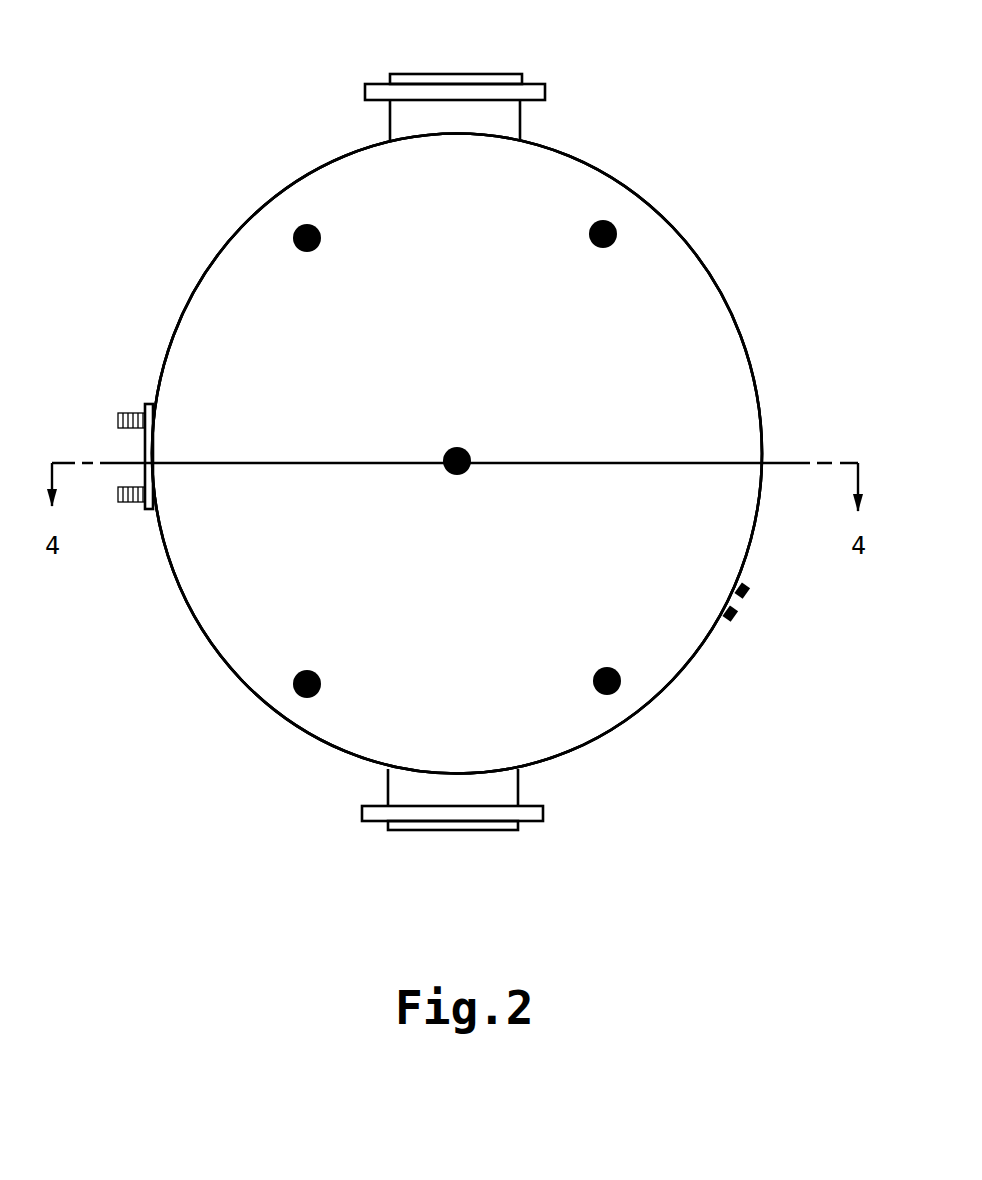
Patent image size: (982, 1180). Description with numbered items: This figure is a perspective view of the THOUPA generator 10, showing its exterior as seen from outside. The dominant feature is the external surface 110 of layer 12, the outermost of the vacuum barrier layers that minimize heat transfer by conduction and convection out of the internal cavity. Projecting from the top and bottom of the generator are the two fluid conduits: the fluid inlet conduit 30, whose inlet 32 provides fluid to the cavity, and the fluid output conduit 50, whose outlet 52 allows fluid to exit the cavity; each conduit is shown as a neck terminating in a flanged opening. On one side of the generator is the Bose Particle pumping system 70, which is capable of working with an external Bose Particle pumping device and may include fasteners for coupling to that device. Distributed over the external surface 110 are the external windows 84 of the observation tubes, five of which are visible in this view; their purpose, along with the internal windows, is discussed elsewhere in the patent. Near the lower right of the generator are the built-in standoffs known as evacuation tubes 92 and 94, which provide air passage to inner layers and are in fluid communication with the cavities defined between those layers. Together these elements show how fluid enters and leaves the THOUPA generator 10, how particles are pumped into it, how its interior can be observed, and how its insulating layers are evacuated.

The THOUPA generator 10 is at (168, 132).
The external surface 110 is at (710, 268).
The layer 12 is at (457, 454).
The fluid inlet conduit 30 is at (372, 783).
The inlet 32 is at (463, 833).
The fluid output conduit 50 is at (547, 118).
The outlet 52 is at (448, 67).
The Bose Particle pumping system 70 is at (146, 402).
The external windows 84 is at (301, 222).
The evacuation tube 92 is at (733, 622).
The evacuation tube 94 is at (752, 594).